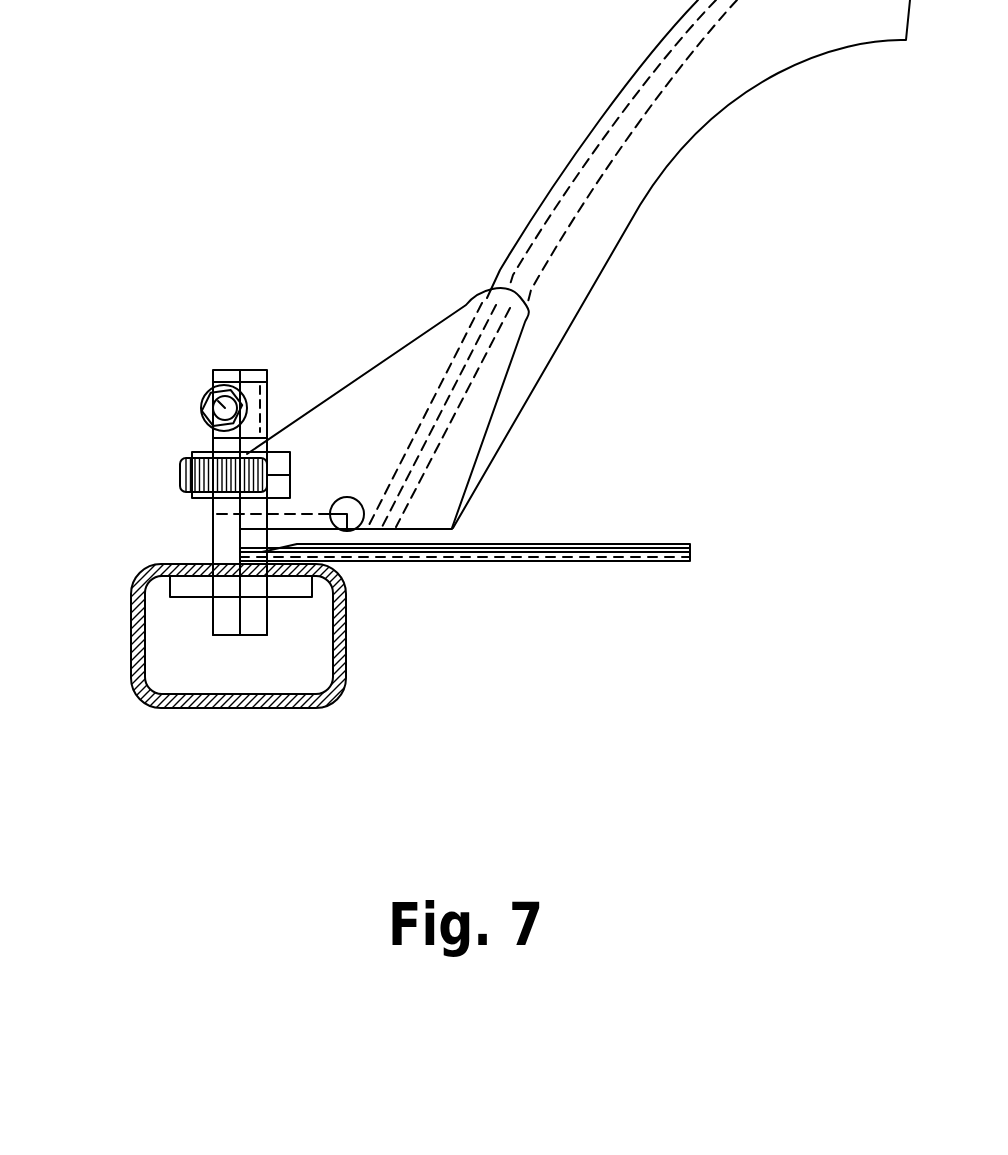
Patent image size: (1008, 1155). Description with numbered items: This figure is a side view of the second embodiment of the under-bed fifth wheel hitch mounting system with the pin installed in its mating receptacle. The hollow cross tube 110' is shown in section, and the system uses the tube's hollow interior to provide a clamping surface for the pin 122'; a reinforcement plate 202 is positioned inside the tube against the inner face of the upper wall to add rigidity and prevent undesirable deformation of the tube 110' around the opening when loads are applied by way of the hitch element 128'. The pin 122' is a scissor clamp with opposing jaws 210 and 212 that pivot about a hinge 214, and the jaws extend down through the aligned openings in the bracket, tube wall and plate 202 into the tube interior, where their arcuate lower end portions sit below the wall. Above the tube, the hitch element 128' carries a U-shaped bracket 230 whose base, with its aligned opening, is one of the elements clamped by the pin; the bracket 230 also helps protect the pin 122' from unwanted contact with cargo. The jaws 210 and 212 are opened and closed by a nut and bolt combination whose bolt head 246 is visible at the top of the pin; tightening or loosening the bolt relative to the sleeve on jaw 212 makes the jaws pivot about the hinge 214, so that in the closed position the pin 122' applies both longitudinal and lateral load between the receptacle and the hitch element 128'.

The cross tube 110' is at (304, 669).
The pin 122' is at (255, 382).
The hitch element 128' is at (639, 264).
The reinforcement plate 202 is at (170, 598).
The jaw 210 is at (213, 630).
The jaw 212 is at (220, 535).
The hinge 214 is at (182, 470).
The U-shaped bracket 230 is at (397, 348).
The bolt head 246 is at (208, 393).